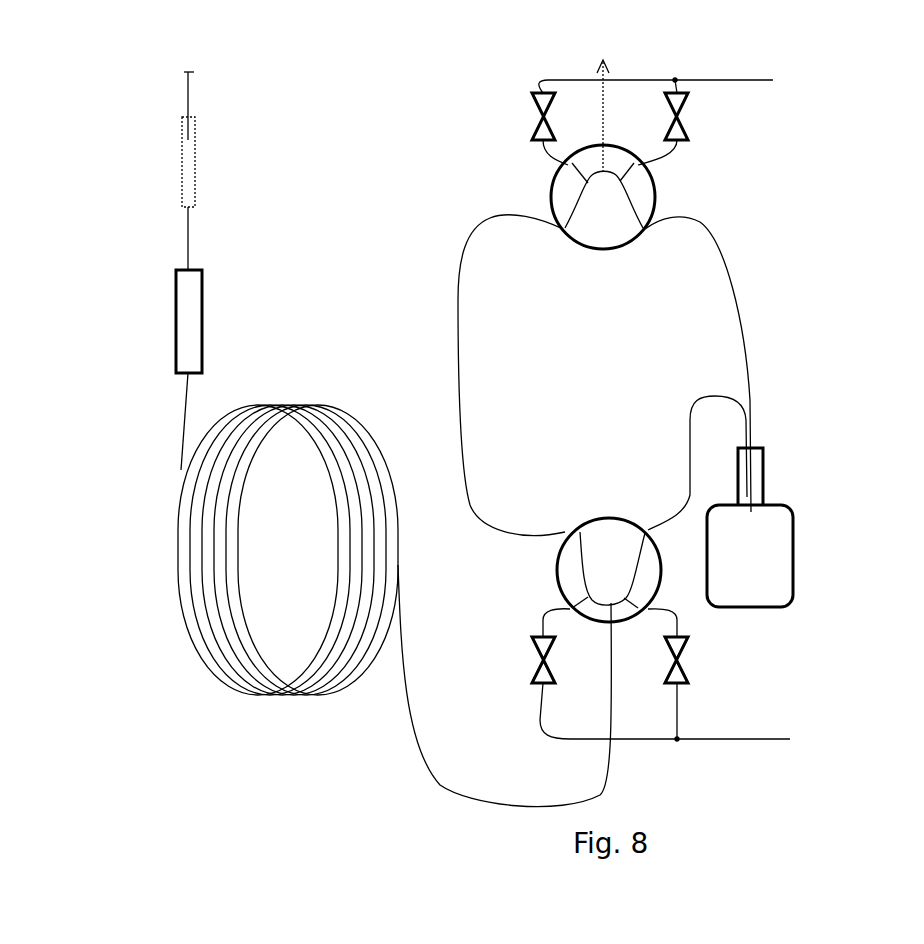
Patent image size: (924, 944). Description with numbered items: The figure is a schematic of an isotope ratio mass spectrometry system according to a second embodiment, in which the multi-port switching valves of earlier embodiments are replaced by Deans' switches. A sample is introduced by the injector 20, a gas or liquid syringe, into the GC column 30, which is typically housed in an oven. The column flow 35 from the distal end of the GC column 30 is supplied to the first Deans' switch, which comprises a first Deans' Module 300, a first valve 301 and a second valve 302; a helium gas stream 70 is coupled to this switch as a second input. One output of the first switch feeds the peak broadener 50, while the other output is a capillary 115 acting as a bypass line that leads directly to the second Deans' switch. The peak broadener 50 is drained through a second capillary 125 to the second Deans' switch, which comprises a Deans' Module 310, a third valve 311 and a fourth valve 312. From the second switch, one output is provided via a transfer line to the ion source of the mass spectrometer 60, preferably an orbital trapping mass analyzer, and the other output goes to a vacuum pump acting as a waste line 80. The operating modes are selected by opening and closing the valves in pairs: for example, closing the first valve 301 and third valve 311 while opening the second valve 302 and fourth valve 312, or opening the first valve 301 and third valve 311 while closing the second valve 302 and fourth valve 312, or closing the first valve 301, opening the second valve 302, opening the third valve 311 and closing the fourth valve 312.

The injector 20 is at (158, 320).
The GC column 30 is at (168, 613).
The column flow 35 is at (530, 803).
The peak broadener 50 is at (800, 530).
The mass spectrometer 60 is at (599, 101).
The helium gas stream 70 is at (687, 720).
The waste line 80 is at (677, 80).
The capillary 115 is at (442, 286).
The second capillary 125 is at (757, 388).
The first Deans' Module 300 is at (608, 505).
The first valve 301 is at (527, 660).
The second valve 302 is at (697, 660).
The Deans' Module 310 is at (600, 262).
The third valve 311 is at (525, 118).
The fourth valve 312 is at (695, 118).